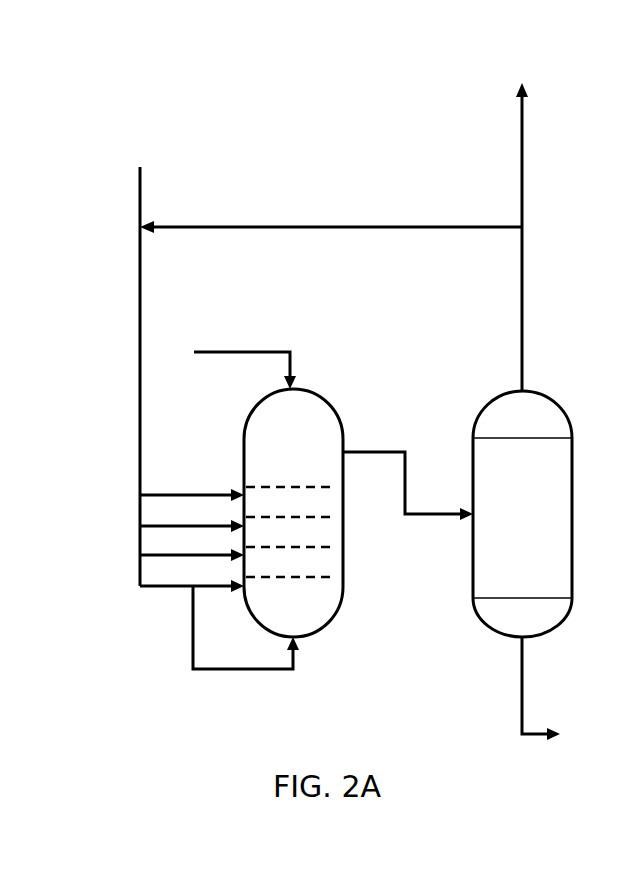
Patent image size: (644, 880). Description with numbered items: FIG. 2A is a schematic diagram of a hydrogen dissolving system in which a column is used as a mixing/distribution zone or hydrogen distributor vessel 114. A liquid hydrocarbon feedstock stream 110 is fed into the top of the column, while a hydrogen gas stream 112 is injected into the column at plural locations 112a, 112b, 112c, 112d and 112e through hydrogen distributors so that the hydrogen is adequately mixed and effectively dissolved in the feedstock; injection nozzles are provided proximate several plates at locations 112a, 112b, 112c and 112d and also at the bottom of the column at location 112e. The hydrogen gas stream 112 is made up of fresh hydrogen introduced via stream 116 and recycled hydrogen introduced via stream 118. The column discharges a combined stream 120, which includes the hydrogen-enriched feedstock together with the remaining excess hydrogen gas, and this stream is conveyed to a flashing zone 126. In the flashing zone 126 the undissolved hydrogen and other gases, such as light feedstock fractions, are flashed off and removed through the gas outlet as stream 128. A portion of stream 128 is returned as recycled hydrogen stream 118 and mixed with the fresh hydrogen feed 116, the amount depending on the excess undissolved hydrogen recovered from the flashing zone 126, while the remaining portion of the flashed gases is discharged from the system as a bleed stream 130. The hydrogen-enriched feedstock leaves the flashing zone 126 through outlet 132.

The liquid hydrocarbon feedstock stream 110 is at (226, 352).
The hydrogen gas stream 112 is at (140, 438).
The hydrogen injection location 112a is at (192, 487).
The hydrogen injection location 112b is at (192, 517).
The hydrogen injection location 112c is at (192, 547).
The hydrogen injection location 112d is at (192, 577).
The hydrogen injection location 112e is at (246, 627).
The mixing/distribution zone 114 is at (266, 398).
The fresh hydrogen stream 116 is at (140, 194).
The recycled hydrogen stream 118 is at (323, 227).
The combined stream 120 is at (396, 452).
The flashing zone 126 is at (536, 506).
The gas outlet stream 128 is at (522, 302).
The bleed stream 130 is at (522, 198).
The hydrogen-enriched feedstock outlet 132 is at (522, 702).